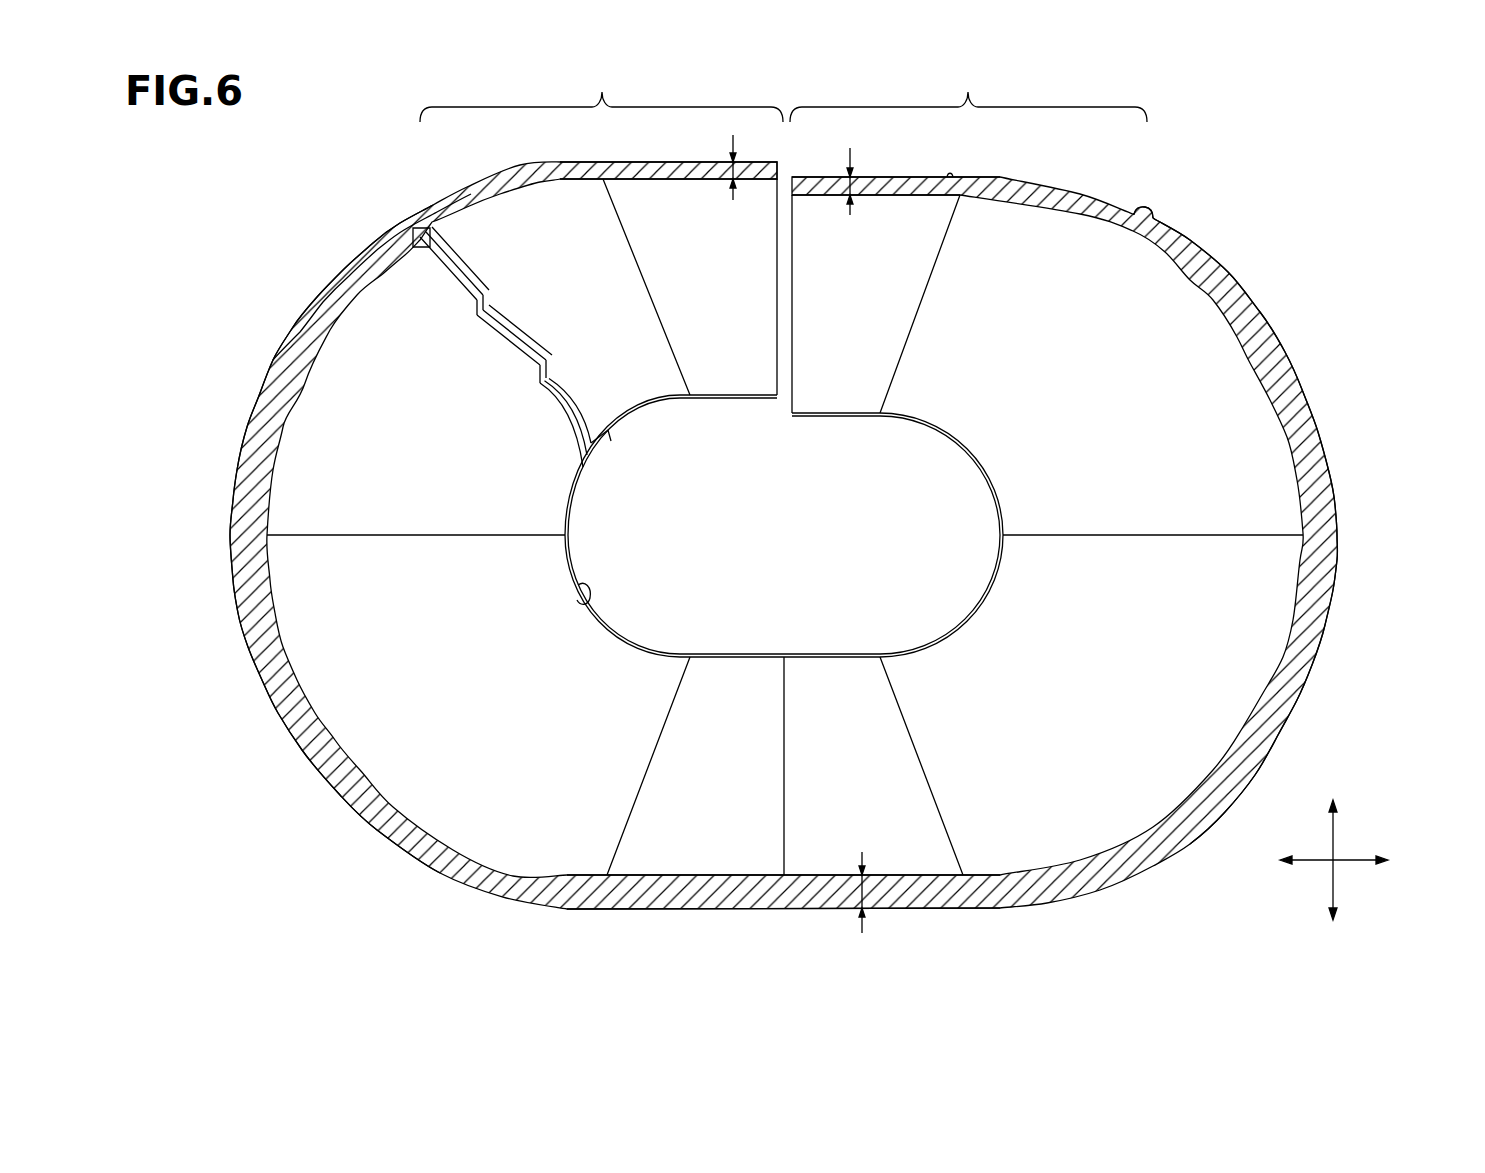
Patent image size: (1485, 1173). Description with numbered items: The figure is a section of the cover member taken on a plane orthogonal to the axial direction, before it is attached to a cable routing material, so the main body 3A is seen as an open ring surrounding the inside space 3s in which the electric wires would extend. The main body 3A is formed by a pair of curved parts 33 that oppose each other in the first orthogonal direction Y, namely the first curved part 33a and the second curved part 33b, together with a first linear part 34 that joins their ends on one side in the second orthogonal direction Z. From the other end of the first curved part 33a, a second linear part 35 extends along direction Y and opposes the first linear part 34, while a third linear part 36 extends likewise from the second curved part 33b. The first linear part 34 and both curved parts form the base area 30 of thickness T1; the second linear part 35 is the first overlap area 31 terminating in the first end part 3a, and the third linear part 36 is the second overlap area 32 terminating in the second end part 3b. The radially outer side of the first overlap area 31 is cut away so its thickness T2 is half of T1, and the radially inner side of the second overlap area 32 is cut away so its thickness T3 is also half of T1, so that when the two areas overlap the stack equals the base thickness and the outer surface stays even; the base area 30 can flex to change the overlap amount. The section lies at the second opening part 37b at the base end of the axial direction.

The main body 3A is at (1310, 275).
The base area 30 is at (1347, 448).
The first overlap area 31 is at (968, 93).
The second overlap area 32 is at (601, 93).
The curved parts 33 is at (792, 539).
The first curved part 33a is at (1330, 620).
The second curved part 33b is at (231, 514).
The first linear part 34 is at (688, 908).
The second linear part 35 is at (919, 195).
The third linear part 36 is at (640, 182).
The second opening part 37b is at (587, 607).
The first end part 3a is at (792, 200).
The second end part 3b is at (777, 180).
The inside space 3s is at (520, 800).
The thickness of base area T1 is at (862, 895).
The thickness of first overlap area T2 is at (851, 170).
The thickness of second overlap area T3 is at (733, 150).
The second orthogonal direction Z is at (1350, 816).
The first orthogonal direction Y is at (1352, 868).